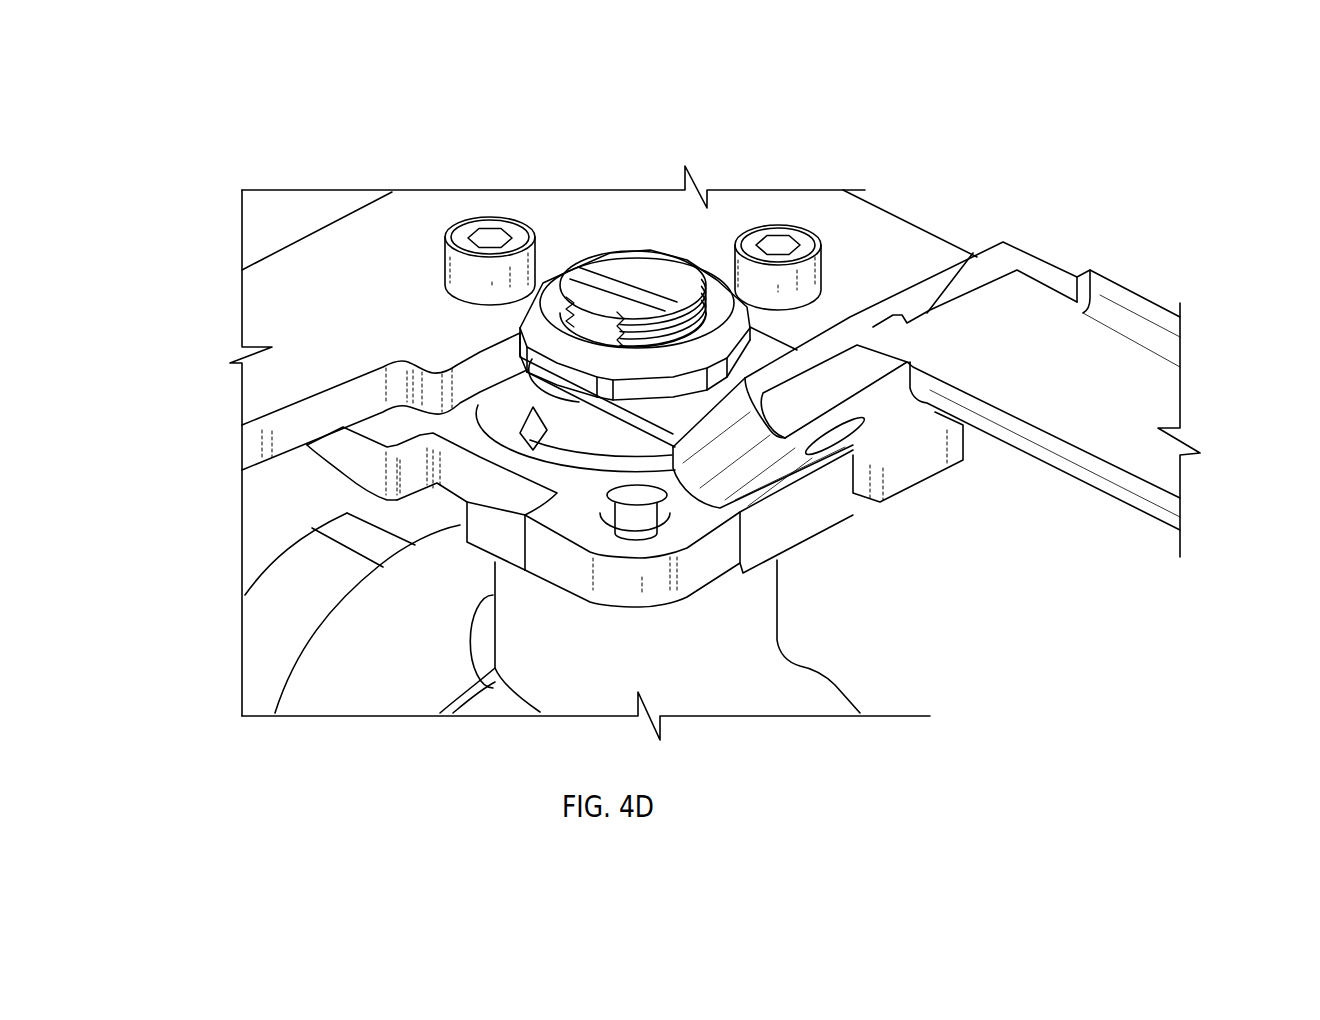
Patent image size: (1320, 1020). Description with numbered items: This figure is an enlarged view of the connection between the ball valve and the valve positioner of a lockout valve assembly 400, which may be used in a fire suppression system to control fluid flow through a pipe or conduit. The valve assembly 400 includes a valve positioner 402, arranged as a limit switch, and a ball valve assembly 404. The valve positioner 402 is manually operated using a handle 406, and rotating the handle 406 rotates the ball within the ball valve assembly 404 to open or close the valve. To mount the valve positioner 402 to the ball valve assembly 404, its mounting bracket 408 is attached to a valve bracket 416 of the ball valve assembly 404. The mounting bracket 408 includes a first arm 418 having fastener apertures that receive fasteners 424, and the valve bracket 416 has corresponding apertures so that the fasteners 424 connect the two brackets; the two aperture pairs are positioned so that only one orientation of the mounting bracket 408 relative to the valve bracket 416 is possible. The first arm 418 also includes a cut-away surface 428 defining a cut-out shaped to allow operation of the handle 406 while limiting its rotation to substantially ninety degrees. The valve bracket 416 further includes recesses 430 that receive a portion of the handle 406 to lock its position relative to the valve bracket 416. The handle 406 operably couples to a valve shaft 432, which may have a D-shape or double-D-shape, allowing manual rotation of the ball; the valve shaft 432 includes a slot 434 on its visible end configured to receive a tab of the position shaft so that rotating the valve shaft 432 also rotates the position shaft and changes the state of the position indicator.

The valve assembly 400 is at (1189, 137).
The valve positioner 402 is at (235, 232).
The ball valve assembly 404 is at (840, 673).
The handle 406 is at (1138, 333).
The mounting bracket 408 is at (552, 330).
The valve bracket 416 is at (920, 462).
The first arm 418 is at (263, 402).
The fasteners 424 is at (496, 226).
The cut-away surface 428 is at (292, 430).
The recesses 430 is at (475, 476).
The valve shaft 432 is at (648, 262).
The slot 434 is at (617, 270).